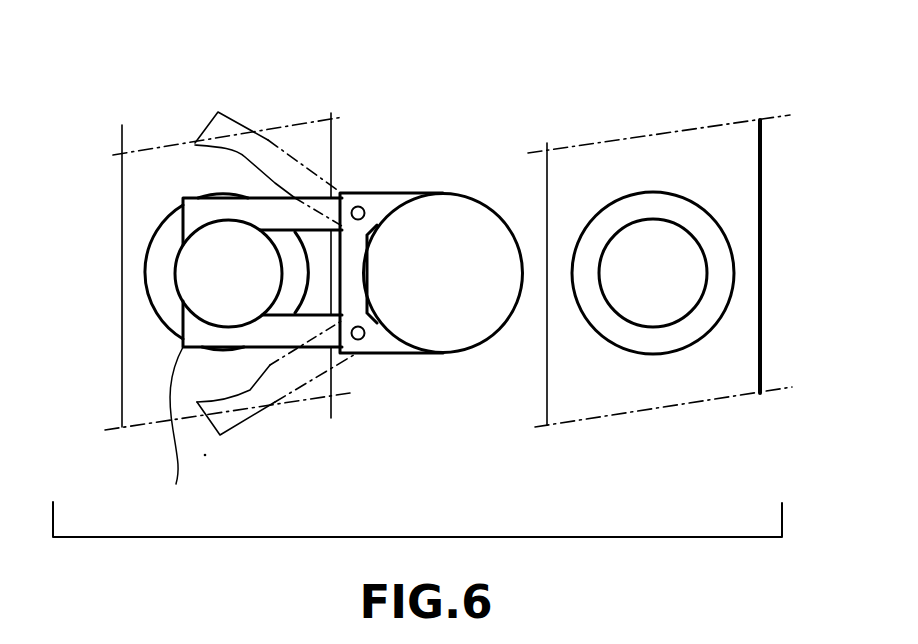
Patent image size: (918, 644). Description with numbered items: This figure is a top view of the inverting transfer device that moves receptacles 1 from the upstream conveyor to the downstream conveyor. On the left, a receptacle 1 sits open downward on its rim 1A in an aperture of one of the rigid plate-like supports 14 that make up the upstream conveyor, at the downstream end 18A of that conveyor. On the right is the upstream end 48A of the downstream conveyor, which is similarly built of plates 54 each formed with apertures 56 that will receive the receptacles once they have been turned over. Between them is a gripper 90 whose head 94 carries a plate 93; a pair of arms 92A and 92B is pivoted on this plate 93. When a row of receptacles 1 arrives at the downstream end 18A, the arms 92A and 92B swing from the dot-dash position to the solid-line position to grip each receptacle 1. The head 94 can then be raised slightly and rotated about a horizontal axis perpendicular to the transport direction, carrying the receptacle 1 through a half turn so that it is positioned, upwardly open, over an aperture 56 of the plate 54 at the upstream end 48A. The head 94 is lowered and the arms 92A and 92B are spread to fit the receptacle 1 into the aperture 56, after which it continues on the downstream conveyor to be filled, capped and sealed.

The receptacle 1 is at (200, 268).
The rim 1A is at (160, 247).
The plate-like support 14 is at (143, 378).
The downstream end of the upstream conveyor 18A is at (149, 127).
The upstream end of the downstream conveyor 48A is at (639, 110).
The plate 54 is at (727, 370).
The aperture 56 is at (673, 278).
The gripper 90 is at (431, 284).
The arm 92A is at (200, 460).
The arm 92B is at (218, 113).
The plate 93 is at (382, 197).
The head 94 is at (462, 237).